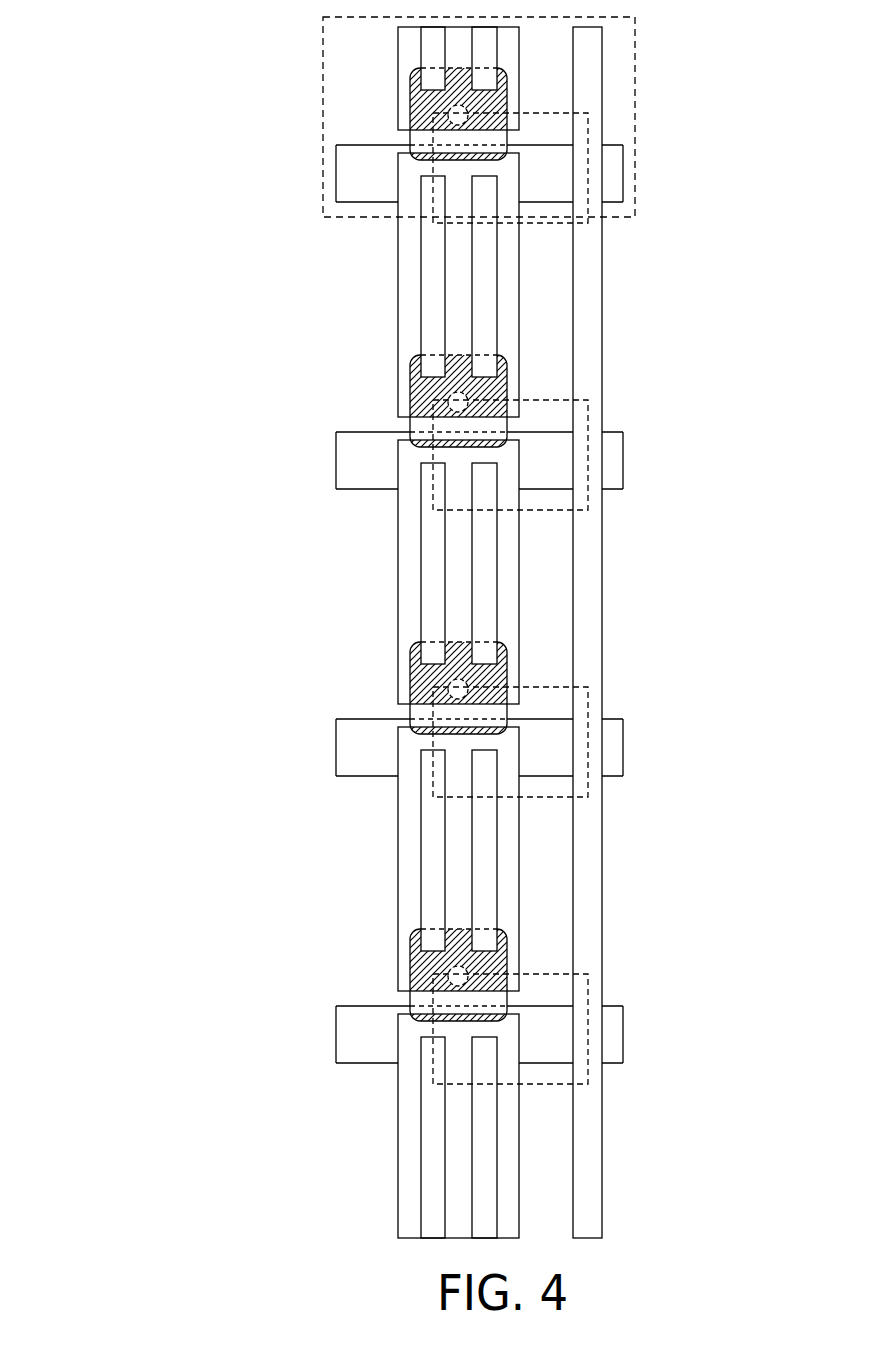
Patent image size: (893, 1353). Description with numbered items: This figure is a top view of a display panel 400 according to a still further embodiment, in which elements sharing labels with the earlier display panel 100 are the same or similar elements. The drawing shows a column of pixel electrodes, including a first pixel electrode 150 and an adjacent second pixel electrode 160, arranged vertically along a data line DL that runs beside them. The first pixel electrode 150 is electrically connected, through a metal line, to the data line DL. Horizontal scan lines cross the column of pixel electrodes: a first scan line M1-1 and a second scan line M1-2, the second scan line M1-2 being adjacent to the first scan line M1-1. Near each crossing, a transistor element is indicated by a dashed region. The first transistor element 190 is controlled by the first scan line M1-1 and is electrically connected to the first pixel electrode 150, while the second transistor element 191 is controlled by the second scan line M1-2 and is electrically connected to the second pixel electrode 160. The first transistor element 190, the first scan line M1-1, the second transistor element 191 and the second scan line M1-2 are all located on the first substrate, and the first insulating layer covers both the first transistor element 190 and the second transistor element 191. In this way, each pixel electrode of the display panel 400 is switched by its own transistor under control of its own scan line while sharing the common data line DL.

The display panel 400 is at (110, 16).
The data line DL is at (602, 77).
The display panel 100 is at (636, 118).
The first pixel electrode 150 is at (398, 288).
The second pixel electrode 160 is at (398, 575).
The first scan line M1-1 is at (623, 460).
The second scan line M1-2 is at (623, 746).
The first transistor element 190 is at (588, 497).
The second transistor element 191 is at (588, 783).